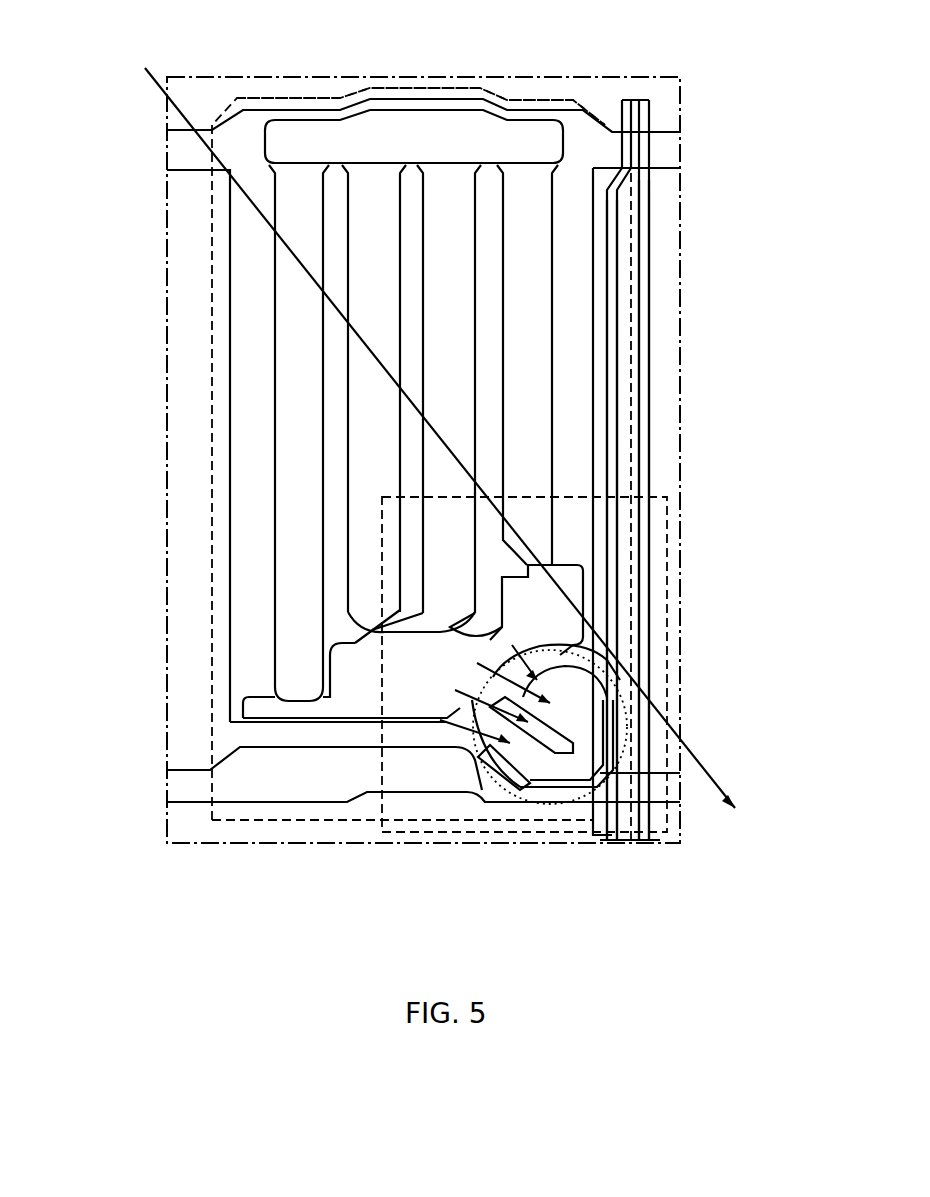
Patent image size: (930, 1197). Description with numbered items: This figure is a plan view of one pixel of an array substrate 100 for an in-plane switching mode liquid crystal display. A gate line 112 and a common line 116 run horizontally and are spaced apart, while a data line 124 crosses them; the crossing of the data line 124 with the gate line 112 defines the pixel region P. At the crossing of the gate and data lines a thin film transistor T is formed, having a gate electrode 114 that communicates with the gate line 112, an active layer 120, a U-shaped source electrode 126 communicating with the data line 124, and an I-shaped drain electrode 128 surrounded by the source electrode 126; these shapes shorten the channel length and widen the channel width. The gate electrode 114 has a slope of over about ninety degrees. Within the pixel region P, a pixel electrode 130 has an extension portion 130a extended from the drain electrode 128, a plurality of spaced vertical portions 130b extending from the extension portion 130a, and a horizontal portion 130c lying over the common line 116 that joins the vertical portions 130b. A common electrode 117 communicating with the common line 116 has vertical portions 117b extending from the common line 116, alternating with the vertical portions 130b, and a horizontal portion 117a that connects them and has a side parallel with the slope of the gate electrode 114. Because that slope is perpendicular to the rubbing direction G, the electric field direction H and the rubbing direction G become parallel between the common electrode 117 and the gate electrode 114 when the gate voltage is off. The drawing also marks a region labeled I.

The array substrate 100 is at (682, 234).
The gate line 112 is at (287, 800).
The gate electrode 114 is at (620, 714).
The common line 116 is at (575, 104).
The common electrode 117 is at (242, 447).
The horizontal portion 117a is at (233, 712).
The vertical portions 117b is at (230, 622).
The active layer 120 is at (535, 795).
The data line 124 is at (650, 357).
The source electrode 126 is at (578, 782).
The drain electrode 128 is at (517, 780).
The pixel electrode 130 is at (540, 343).
The extension portion 130a is at (587, 577).
The vertical portions 130b is at (510, 420).
The horizontal portion 130c is at (382, 106).
The rubbing direction G is at (173, 102).
The electric field direction H is at (600, 663).
The region I is at (667, 580).
The pixel region P is at (208, 497).
The thin film transistor T is at (467, 773).